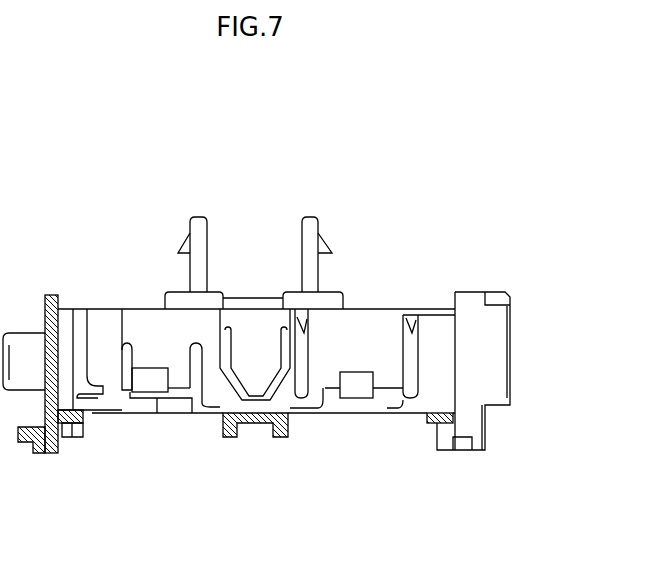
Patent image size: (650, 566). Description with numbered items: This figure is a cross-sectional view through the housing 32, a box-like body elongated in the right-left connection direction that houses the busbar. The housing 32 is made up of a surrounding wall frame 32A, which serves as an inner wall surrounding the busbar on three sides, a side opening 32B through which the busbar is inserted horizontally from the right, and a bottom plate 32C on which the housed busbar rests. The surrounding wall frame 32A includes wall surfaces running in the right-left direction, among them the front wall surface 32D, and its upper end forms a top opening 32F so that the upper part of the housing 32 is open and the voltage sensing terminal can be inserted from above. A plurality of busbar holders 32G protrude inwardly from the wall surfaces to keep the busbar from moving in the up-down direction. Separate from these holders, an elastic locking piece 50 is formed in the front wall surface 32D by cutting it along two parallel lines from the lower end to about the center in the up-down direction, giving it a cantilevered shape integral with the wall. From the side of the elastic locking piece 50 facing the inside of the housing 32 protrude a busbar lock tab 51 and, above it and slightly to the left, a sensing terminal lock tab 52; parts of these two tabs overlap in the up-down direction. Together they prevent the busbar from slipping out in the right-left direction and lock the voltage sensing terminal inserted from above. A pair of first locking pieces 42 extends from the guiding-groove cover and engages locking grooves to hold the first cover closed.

The housing 32 is at (393, 284).
The surrounding wall frame 32A is at (58, 328).
The side opening 32B is at (492, 340).
The bottom plate 32C is at (443, 412).
The front wall surface 32D is at (392, 323).
The top opening 32F is at (105, 312).
The busbar holders 32G is at (86, 327).
The first locking pieces 42 is at (308, 218).
The elastic locking piece 50 is at (166, 341).
The busbar lock tab 51 is at (172, 404).
The sensing terminal lock tab 52 is at (140, 397).